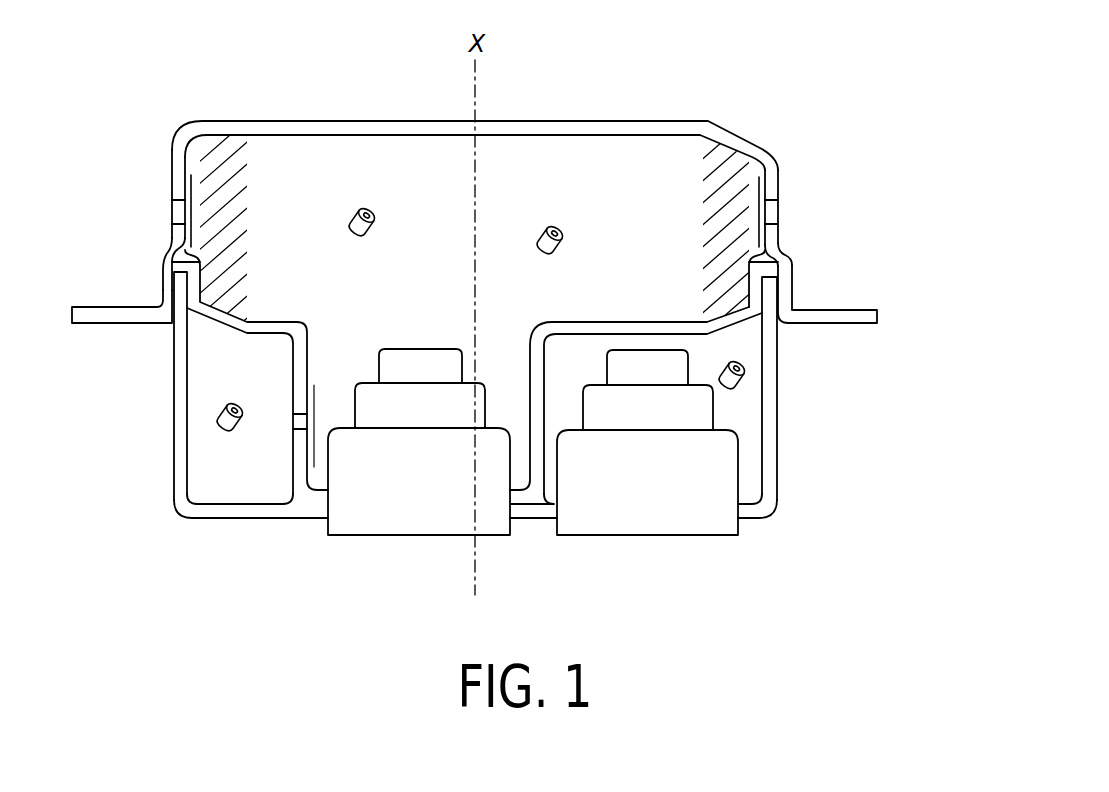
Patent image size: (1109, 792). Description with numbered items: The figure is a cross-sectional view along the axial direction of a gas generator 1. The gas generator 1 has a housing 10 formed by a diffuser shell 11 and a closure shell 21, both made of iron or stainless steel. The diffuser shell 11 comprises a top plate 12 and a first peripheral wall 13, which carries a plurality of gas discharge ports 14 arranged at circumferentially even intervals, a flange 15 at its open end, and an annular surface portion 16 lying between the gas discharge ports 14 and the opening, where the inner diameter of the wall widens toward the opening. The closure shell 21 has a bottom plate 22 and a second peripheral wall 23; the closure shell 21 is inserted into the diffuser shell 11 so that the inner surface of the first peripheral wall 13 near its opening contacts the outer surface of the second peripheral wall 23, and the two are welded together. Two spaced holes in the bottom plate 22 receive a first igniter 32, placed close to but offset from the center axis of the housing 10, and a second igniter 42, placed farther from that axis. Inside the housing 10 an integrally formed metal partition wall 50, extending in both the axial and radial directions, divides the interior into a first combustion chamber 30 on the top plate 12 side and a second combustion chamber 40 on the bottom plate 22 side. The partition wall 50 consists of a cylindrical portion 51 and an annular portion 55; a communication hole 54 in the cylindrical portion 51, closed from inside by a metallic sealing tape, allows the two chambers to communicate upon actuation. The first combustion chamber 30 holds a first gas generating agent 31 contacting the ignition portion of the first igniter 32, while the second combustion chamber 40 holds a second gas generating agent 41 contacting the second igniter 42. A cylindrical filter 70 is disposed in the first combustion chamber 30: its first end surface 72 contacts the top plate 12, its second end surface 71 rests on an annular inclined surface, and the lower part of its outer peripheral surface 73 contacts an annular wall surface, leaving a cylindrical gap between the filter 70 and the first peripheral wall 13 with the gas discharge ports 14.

The gas generator 1 is at (554, 99).
The housing 10 is at (930, 298).
The diffuser shell 11 is at (792, 293).
The top plate 12 is at (342, 118).
The first peripheral wall 13 is at (780, 167).
The gas discharge ports 14 is at (779, 210).
The flange 15 is at (97, 304).
The annular surface portion 16 is at (170, 252).
The closure shell 21 is at (779, 383).
The bottom plate 22 is at (262, 519).
The second peripheral wall 23 is at (779, 410).
The first combustion chamber 30 is at (585, 195).
The first gas generating agent 31 is at (565, 247).
The first igniter 32 is at (385, 519).
The second combustion chamber 40 is at (228, 365).
The second gas generating agent 41 is at (239, 428).
The second igniter 42 is at (632, 527).
The partition wall 50 is at (520, 329).
The cylindrical portion 51 is at (290, 483).
The communication hole 54 is at (293, 422).
The annular portion 55 is at (665, 322).
The cylindrical filter 70 is at (222, 185).
The second end surface 71 is at (245, 312).
The first end surface 72 is at (222, 140).
The outer peripheral surface 73 is at (203, 188).